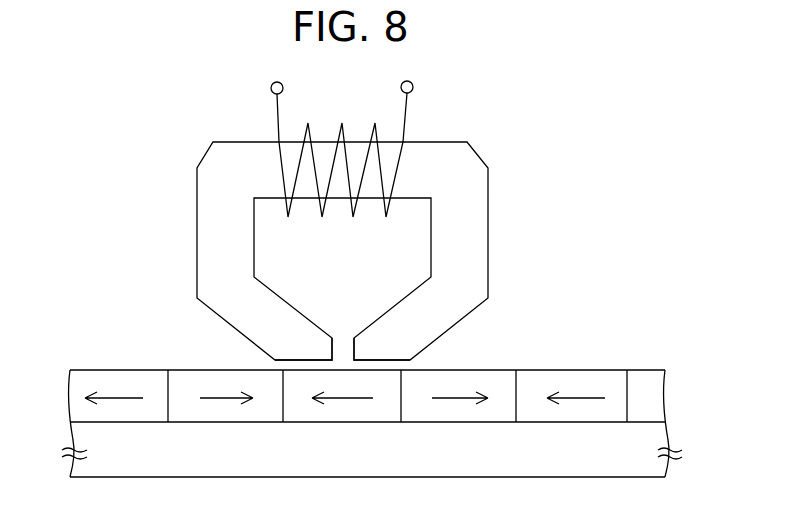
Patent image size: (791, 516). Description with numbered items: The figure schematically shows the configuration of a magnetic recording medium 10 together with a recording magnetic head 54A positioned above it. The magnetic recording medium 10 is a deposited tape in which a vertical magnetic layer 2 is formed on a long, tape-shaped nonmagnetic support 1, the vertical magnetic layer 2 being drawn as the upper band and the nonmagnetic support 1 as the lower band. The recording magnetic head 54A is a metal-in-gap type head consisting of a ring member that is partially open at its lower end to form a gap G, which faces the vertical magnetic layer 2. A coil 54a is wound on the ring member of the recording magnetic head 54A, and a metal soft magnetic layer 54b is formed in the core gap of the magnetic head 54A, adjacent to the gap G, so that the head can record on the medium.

The recording magnetic head 54A is at (467, 165).
The coil 54a is at (412, 92).
The metal soft magnetic layer 54b is at (308, 362).
The gap G is at (343, 351).
The magnetic recording medium 10 is at (382, 381).
The vertical magnetic layer 2 is at (648, 398).
The nonmagnetic support 1 is at (650, 438).